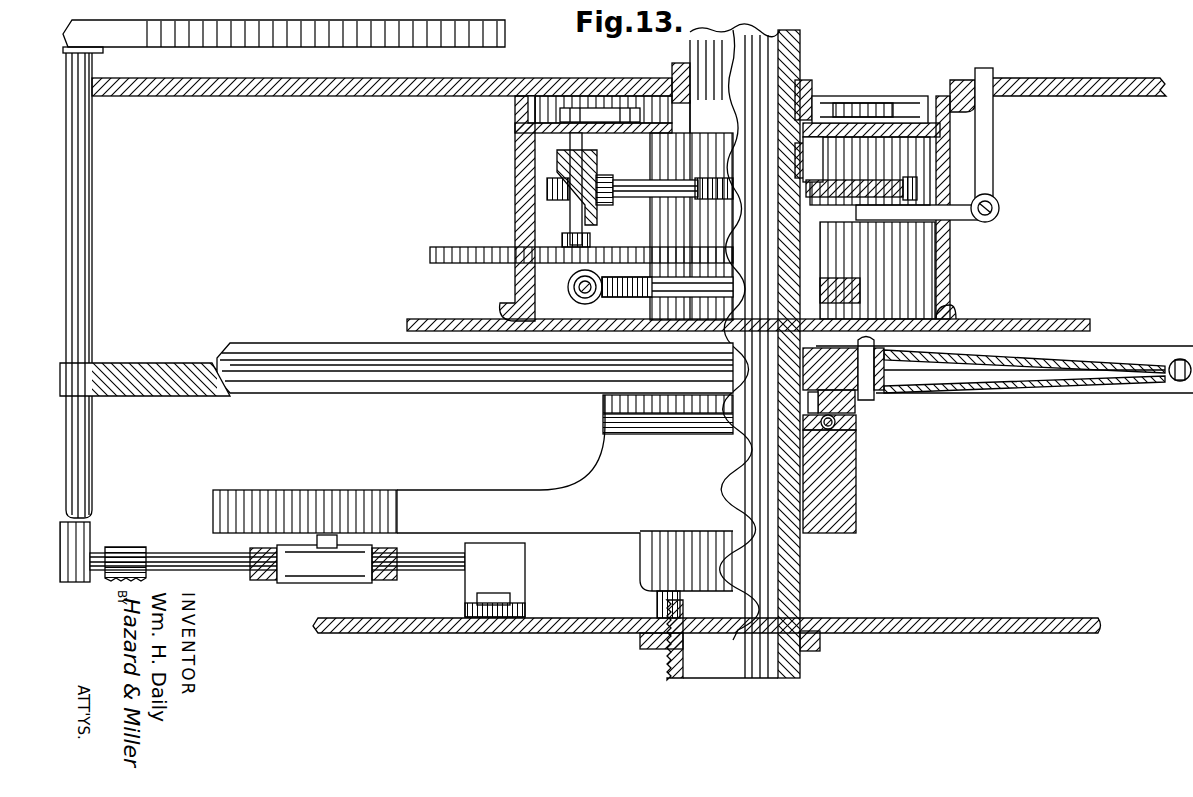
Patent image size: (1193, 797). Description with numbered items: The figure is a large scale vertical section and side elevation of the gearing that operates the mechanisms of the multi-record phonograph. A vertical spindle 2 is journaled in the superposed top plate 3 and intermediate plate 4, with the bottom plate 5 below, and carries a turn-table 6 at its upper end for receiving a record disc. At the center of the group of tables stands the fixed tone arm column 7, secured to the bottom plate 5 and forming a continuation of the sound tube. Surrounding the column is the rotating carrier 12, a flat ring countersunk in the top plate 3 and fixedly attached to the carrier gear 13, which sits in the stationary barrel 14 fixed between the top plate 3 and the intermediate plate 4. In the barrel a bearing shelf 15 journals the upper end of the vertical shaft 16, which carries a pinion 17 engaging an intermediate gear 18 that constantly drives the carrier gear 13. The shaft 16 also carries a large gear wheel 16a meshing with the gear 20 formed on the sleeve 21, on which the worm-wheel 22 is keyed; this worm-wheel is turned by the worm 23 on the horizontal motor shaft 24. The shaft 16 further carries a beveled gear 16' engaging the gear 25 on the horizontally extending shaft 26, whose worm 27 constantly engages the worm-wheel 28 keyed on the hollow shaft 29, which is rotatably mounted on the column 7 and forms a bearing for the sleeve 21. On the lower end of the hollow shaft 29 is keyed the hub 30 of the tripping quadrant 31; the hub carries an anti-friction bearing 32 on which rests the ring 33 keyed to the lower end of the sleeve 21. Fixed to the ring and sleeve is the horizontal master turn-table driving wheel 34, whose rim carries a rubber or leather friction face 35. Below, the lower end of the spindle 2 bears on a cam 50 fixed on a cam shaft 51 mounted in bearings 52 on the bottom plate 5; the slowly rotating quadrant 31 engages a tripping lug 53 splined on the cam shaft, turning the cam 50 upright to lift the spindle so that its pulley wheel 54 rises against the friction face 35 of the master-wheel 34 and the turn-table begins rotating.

The vertical spindle 2 is at (93, 274).
The top plate 3 is at (1070, 86).
The intermediate plate 4 is at (1032, 327).
The bottom plate 5 is at (974, 623).
The turn-table 6 is at (207, 36).
The tone arm column 7 is at (797, 42).
The rotating carrier 12 is at (862, 82).
The carrier gear 13 is at (918, 90).
The stationary barrel 14 is at (948, 262).
The bearing shelf 15 is at (545, 131).
The vertical shaft 16 is at (532, 190).
The beveled gear 16' is at (596, 180).
The large gear wheel 16a is at (440, 257).
The pinion 17 is at (527, 117).
The intermediate gear 18 is at (622, 107).
The gear 20 is at (662, 233).
The sleeve 21 is at (667, 300).
The worm-wheel 22 is at (860, 288).
The worm 23 is at (572, 283).
The motor shaft 24 is at (580, 288).
The gear 25 is at (600, 180).
The horizontally extending shaft 26 is at (642, 196).
The worm 27 is at (703, 200).
The worm-wheel 28 is at (548, 184).
The hollow shaft 29 is at (806, 159).
The hub 30 is at (843, 497).
The tripping quadrant 31 is at (395, 494).
The anti-friction bearing 32 is at (862, 425).
The ring 33 is at (852, 412).
The master turn-table driving wheel 34 is at (292, 346).
The friction face 35 is at (462, 377).
The cam 50 is at (92, 538).
The cam shaft 51 is at (183, 554).
The bearings 52 is at (142, 546).
The tripping lug 53 is at (372, 546).
The pulley wheel 54 is at (150, 374).